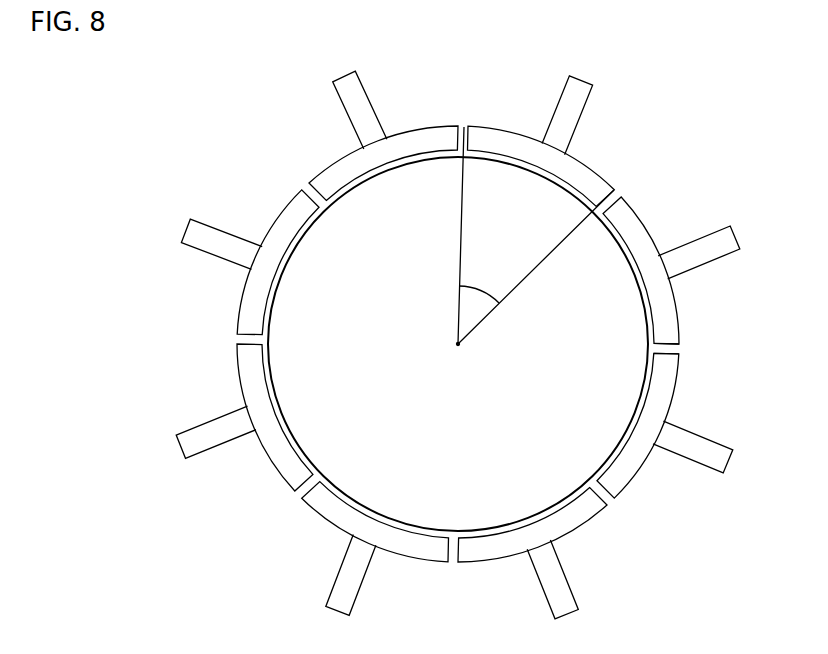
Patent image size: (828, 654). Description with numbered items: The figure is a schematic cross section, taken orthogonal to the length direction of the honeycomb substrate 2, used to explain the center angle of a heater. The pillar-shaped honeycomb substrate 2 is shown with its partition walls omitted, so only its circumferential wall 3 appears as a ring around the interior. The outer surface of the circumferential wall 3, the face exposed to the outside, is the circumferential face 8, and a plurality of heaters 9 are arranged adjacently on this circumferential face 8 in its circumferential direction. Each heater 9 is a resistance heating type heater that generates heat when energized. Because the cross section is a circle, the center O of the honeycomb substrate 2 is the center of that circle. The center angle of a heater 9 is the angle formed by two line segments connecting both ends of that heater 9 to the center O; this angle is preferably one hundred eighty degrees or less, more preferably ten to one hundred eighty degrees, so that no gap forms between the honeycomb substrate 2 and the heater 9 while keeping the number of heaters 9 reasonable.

The honeycomb substrate 2 is at (360, 227).
The circumferential wall 3 is at (260, 339).
The circumferential face 8 is at (657, 350).
The heater 9 is at (408, 135).
The center of the honeycomb substrate O is at (460, 346).